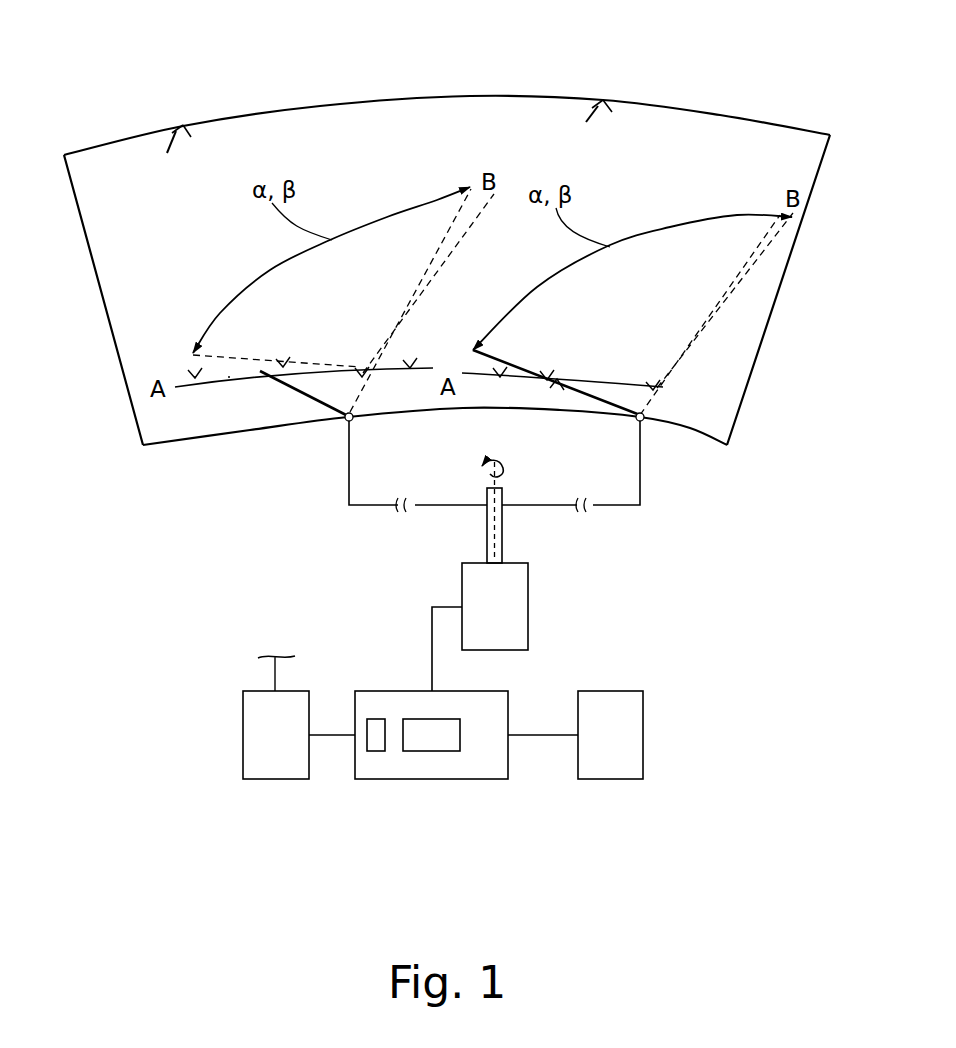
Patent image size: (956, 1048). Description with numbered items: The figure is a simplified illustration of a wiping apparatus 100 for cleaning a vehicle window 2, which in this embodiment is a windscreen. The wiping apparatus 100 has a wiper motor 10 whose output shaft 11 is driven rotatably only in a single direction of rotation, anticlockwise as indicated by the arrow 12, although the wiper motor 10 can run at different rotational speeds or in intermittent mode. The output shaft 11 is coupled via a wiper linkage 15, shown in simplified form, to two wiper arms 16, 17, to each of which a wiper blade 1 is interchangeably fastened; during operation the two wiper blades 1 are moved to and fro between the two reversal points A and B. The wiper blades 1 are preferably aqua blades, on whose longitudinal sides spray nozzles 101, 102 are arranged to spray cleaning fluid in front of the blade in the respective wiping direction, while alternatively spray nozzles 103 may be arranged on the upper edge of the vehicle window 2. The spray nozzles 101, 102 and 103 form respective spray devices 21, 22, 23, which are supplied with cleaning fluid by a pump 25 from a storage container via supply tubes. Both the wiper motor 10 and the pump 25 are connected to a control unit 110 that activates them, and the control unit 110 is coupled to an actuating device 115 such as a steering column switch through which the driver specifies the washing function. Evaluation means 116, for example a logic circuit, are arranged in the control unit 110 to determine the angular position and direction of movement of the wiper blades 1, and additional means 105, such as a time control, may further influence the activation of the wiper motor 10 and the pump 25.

The wiper blade 1 is at (317, 363).
The vehicle window 2 is at (540, 112).
The wiper motor 10 is at (506, 604).
The output shaft 11 is at (503, 540).
The arrow 12 is at (506, 467).
The wiper linkage 15 is at (461, 506).
The wiper arm 16 is at (318, 405).
The wiper arm 17 is at (587, 392).
The spray device 21 is at (266, 338).
The spray device 22 is at (186, 410).
The spray device 23 is at (162, 158).
The pump 25 is at (243, 739).
The wiping apparatus 100 is at (356, 575).
The spray nozzle 101 is at (258, 356).
The spray nozzle 102 is at (494, 384).
The spray nozzle 103 is at (183, 124).
The additional means 105 is at (377, 736).
The control unit 110 is at (395, 780).
The actuating device 115 is at (610, 780).
The evaluation means 116 is at (436, 736).